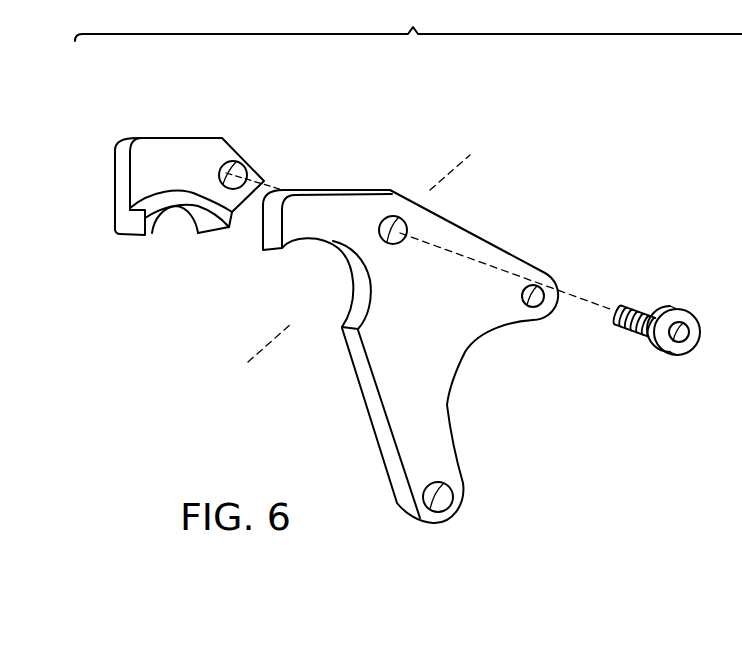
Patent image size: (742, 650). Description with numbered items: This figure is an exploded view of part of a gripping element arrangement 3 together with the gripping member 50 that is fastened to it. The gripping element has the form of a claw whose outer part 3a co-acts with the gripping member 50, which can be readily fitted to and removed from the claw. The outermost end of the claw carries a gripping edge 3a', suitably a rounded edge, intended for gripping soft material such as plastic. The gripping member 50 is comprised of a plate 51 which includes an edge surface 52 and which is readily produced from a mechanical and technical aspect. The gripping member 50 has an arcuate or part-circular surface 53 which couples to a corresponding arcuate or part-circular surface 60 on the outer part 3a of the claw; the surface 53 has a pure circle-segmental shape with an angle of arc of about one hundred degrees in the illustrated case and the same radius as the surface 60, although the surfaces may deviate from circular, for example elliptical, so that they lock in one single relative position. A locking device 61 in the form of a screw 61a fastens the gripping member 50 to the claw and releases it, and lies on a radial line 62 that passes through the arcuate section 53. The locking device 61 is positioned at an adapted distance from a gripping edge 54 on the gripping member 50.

The gripping element arrangement 3 is at (415, 335).
The outer part 3a is at (404, 210).
The gripping edge 3a' is at (251, 247).
The gripping member 50 is at (205, 169).
The plate 51 is at (195, 137).
The edge surface 52 is at (176, 236).
The arcuate or part-circular surface 53 is at (182, 196).
The gripping edge 54 is at (126, 234).
The arcuate or part-circular surface 60 is at (342, 253).
The locking device 61 is at (666, 317).
The screw 61a is at (654, 347).
The radial line 62 is at (454, 168).